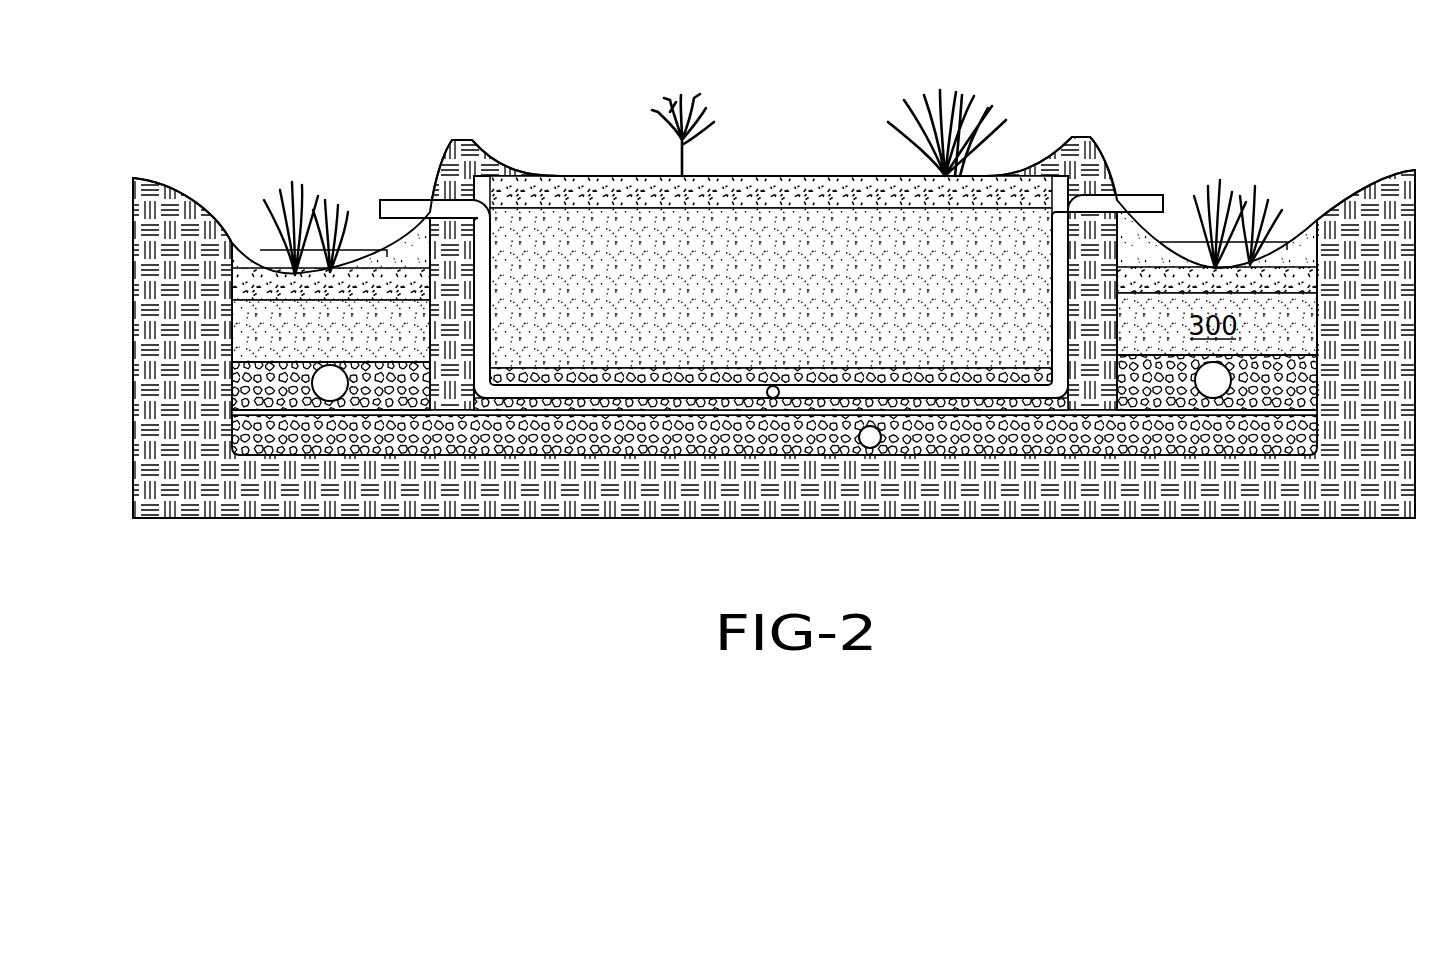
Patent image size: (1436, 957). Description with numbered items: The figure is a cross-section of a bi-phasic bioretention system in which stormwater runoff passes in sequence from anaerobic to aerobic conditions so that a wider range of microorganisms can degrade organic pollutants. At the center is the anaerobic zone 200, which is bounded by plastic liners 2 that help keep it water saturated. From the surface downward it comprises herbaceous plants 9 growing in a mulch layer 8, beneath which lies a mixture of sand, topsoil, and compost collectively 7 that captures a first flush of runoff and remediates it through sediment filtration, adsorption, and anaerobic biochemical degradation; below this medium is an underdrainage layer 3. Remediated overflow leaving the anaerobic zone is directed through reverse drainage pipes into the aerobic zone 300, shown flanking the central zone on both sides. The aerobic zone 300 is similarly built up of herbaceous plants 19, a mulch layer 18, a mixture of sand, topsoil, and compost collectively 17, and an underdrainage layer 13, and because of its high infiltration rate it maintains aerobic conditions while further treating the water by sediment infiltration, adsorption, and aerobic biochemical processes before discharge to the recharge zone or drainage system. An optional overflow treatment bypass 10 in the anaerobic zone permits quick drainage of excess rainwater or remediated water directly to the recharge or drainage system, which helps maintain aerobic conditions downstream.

The plastic liner 2 is at (1078, 165).
The underdrainage layer 3 is at (935, 375).
The mixture of sand, topsoil, and compost 7 is at (609, 250).
The mulch layer 8 is at (792, 176).
The herbaceous plants 9 is at (660, 103).
The overflow treatment bypass 10 is at (768, 396).
The underdrainage layer 13 is at (1262, 372).
The mixture of sand, topsoil, and compost 17 is at (1163, 325).
The mulch layer 18 is at (1163, 285).
The herbaceous plants 19 is at (318, 202).
The anaerobic zone 200 is at (747, 304).
The aerobic zone 300 is at (307, 344).